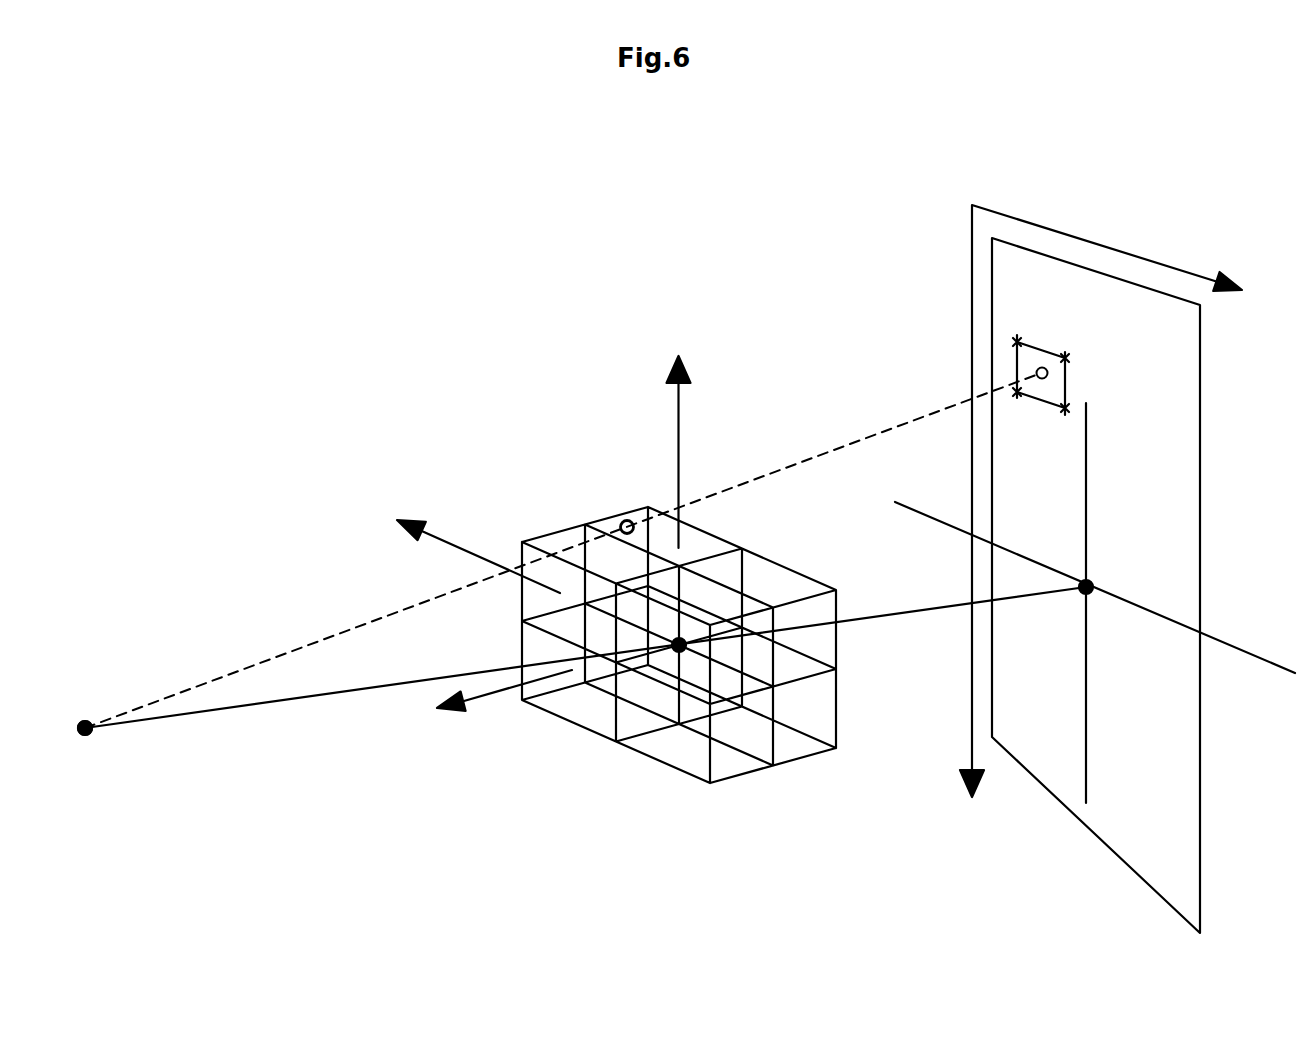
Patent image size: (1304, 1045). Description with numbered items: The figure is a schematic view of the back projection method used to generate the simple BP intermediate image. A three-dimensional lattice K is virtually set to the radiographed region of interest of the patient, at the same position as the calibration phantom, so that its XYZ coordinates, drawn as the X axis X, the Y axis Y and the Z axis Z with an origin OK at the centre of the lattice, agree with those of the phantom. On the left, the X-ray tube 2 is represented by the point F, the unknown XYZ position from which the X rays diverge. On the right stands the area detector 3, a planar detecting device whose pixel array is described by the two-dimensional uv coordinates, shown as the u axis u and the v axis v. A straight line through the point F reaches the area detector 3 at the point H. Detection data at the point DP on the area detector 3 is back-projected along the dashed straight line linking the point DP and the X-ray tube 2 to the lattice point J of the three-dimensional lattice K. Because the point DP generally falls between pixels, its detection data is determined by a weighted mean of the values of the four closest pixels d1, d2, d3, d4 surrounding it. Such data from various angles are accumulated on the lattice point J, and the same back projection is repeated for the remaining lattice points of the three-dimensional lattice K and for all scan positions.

The X-ray tube 2 is at (86, 720).
The area detector 3 is at (1203, 368).
The three-dimensional lattice K is at (588, 757).
The origin of cube coordinate system OK is at (679, 648).
The lattice point J is at (625, 514).
The point F is at (95, 745).
The point H is at (1095, 603).
The point D_P DP is at (1050, 380).
The pixel d1 is at (1017, 340).
The pixel d2 is at (1065, 356).
The pixel d3 is at (1017, 394).
The pixel d4 is at (1065, 410).
The X axis X is at (456, 549).
The Y axis Y is at (475, 709).
The Z axis Z is at (664, 441).
The u coordinate axis u is at (1144, 235).
The v coordinate axis v is at (935, 769).